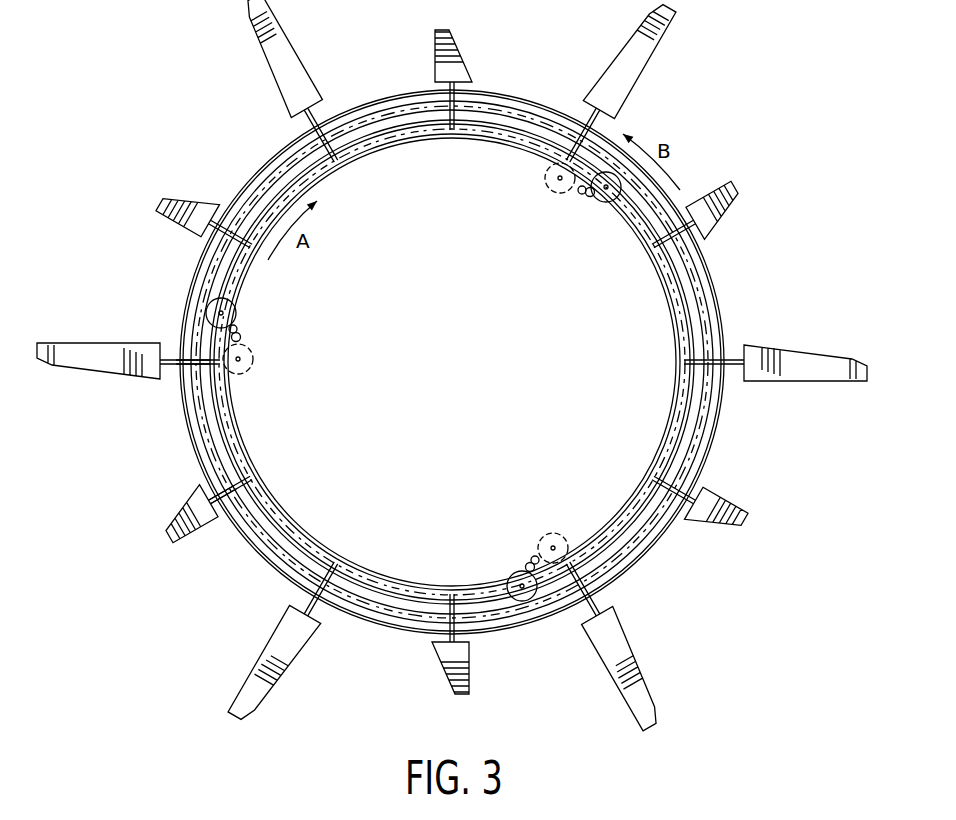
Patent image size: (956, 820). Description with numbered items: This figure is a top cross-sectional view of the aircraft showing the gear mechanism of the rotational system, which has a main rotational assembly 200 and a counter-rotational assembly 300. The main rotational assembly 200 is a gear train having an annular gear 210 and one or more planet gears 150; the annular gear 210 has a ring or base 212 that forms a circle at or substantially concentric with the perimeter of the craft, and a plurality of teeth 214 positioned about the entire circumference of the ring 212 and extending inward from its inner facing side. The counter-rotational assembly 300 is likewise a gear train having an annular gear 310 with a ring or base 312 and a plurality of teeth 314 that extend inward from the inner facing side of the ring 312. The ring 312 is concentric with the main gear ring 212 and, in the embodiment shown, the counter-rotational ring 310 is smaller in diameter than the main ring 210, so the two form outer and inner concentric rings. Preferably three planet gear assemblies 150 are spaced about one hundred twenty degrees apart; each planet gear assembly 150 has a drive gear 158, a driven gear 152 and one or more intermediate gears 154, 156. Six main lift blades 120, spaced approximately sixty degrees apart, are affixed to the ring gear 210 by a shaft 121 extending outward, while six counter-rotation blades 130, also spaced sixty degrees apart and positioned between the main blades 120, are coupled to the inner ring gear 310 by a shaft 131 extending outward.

The main lift blade 120 is at (822, 370).
The shaft 121 is at (168, 372).
The counter-rotation blade 130 is at (730, 515).
The shaft 131 is at (225, 517).
The planet gear assembly 150 is at (528, 528).
The driven gear 152 is at (515, 577).
The intermediate gear 154 is at (530, 563).
The intermediate gear 156 is at (534, 556).
The drive gear 158 is at (556, 540).
The main rotational assembly 200 is at (200, 294).
The annular gear 210 is at (705, 262).
The ring 212 is at (708, 420).
The teeth 214 is at (200, 372).
The counter-rotational assembly 300 is at (385, 135).
The annular gear 310 is at (680, 328).
The ring 312 is at (673, 452).
The teeth 314 is at (225, 375).